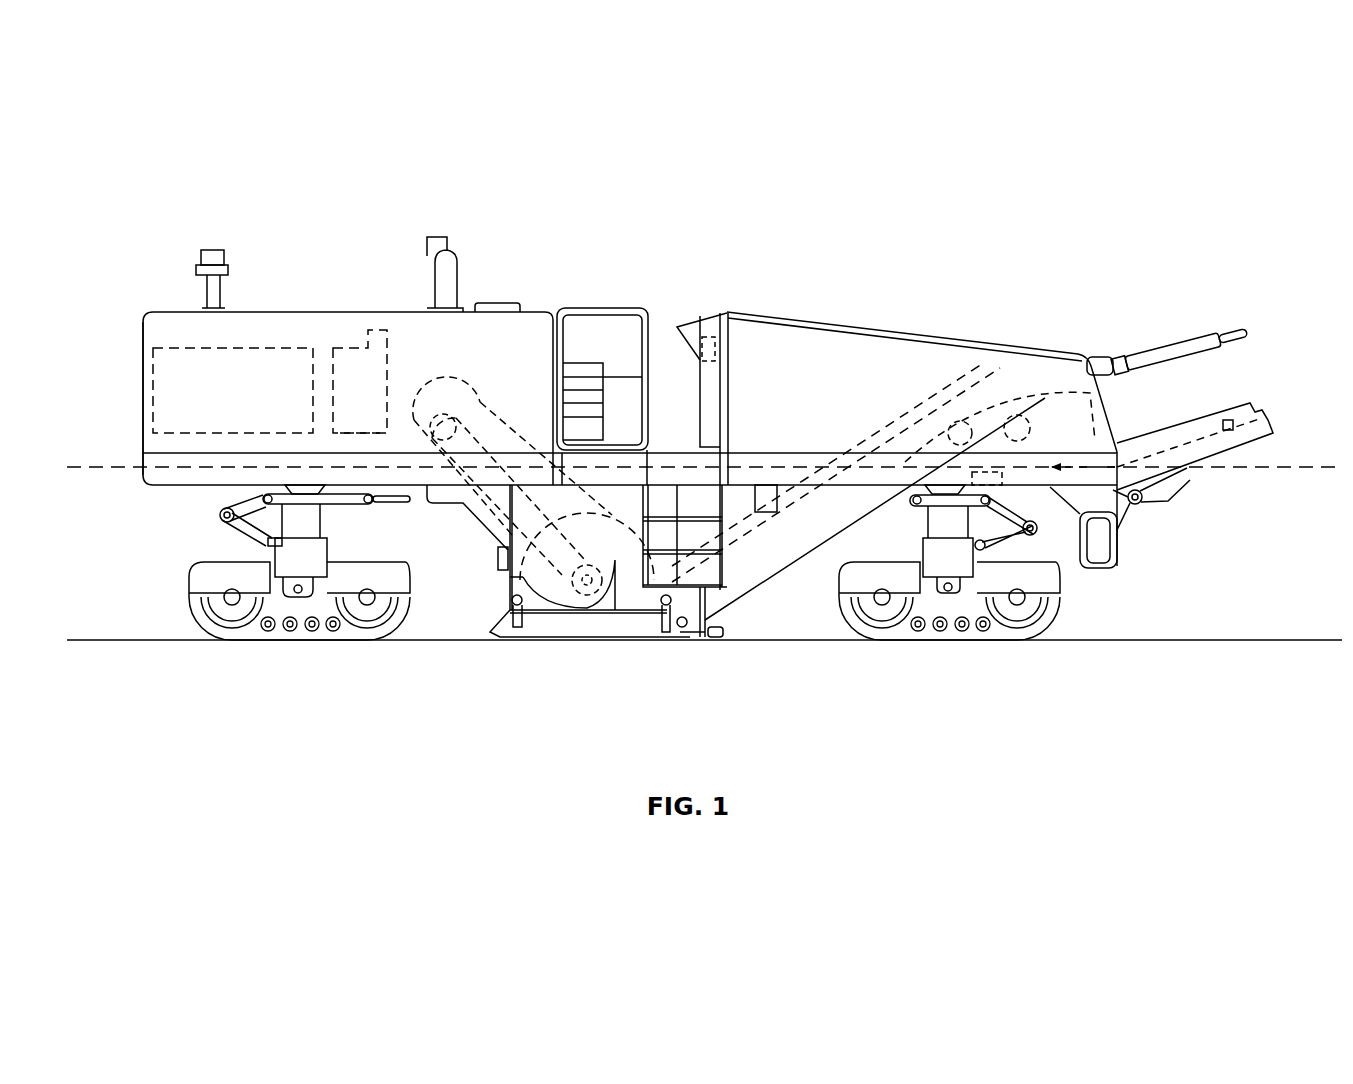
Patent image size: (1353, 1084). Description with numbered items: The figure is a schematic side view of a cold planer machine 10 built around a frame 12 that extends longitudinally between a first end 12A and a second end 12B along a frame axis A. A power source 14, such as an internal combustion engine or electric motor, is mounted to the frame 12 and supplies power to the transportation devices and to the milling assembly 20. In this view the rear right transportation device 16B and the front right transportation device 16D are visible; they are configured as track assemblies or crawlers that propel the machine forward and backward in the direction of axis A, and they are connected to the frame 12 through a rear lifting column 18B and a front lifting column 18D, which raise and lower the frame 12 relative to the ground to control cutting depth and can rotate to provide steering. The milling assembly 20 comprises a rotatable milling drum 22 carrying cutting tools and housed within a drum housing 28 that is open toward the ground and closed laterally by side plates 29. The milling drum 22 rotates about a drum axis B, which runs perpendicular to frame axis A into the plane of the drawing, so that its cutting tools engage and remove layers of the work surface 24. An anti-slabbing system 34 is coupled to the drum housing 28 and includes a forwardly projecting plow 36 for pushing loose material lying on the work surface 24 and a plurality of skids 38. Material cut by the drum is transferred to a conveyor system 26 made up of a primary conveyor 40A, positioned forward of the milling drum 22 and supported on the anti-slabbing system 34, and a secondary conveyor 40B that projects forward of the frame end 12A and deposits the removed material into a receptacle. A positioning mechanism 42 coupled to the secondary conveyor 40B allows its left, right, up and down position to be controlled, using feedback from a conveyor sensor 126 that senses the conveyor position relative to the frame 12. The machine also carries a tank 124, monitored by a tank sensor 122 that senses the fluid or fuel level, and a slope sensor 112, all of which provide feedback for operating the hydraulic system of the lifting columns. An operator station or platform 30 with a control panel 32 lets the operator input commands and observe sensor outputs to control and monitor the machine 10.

The cold planer machine 10 is at (1140, 212).
The frame 12 is at (193, 488).
The first end 12A is at (1118, 432).
The second end 12B is at (140, 470).
The power source 14 is at (215, 367).
The rear right transportation device 16B is at (197, 613).
The front right transportation device 16D is at (1058, 607).
The rear lifting column 18B is at (305, 512).
The front lifting column 18D is at (962, 515).
The milling assembly 20 is at (505, 605).
The milling drum 22 is at (650, 600).
The work surface 24 is at (513, 642).
The conveyor system 26 is at (1252, 396).
The drum housing 28 is at (597, 500).
The side plates 29 is at (532, 637).
The operator station or platform 30 is at (665, 326).
The control panel 32 is at (684, 326).
The anti-slabbing system 34 is at (735, 632).
The plow 36 is at (713, 637).
The skids 38 is at (657, 643).
The primary conveyor 40A is at (757, 590).
The secondary conveyor 40B is at (1229, 448).
The positioning mechanism 42 is at (1205, 332).
The slope sensor 112 is at (777, 497).
The tank sensor 122 is at (374, 338).
The tank 124 is at (357, 367).
The conveyor sensor 126 is at (1258, 412).
The frame axis A is at (1293, 468).
The drum axis B is at (587, 583).